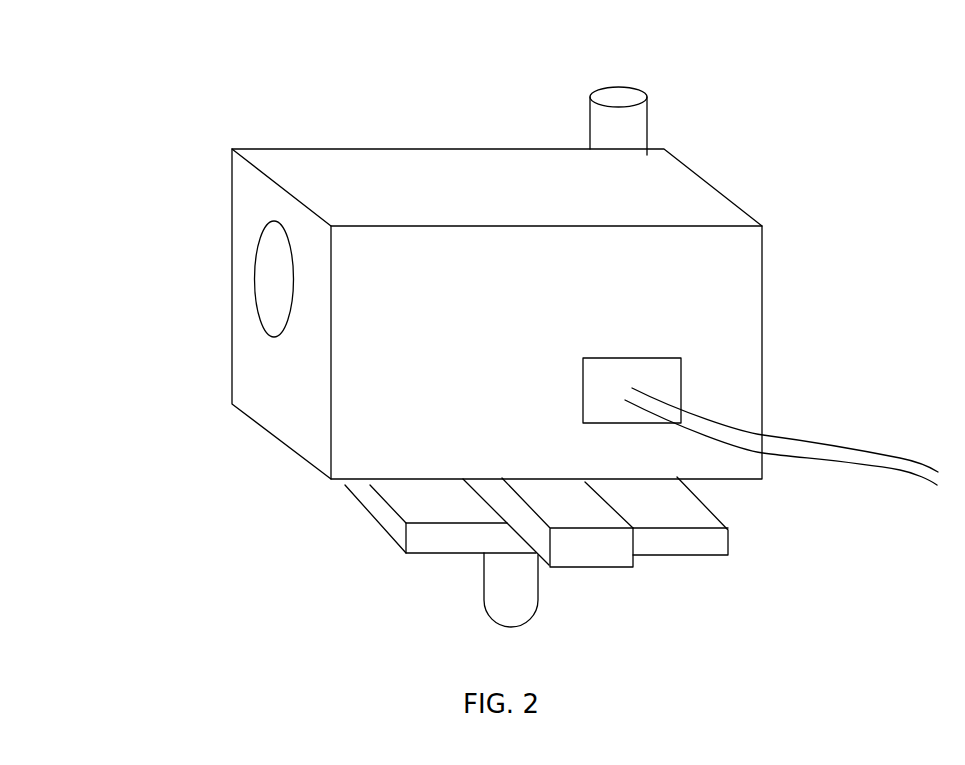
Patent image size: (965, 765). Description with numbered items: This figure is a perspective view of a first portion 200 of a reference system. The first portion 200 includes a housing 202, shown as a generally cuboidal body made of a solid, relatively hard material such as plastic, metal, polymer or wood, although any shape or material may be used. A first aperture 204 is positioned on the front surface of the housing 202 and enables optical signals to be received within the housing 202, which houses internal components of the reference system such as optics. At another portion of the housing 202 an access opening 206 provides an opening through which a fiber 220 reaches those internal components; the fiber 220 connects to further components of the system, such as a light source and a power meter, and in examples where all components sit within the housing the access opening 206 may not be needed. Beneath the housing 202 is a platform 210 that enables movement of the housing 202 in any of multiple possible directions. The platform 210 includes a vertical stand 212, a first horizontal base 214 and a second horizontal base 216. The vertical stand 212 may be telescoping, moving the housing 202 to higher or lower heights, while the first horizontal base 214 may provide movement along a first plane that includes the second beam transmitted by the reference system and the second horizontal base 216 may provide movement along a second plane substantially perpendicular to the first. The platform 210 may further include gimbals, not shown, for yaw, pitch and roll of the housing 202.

The first portion 200 is at (172, 137).
The housing 202 is at (400, 170).
The first aperture 204 is at (267, 288).
The access opening 206 is at (612, 358).
The platform 210 is at (430, 592).
The vertical stand 212 is at (540, 612).
The first horizontal base 214 is at (728, 555).
The second horizontal base 216 is at (623, 568).
The fiber 220 is at (845, 448).